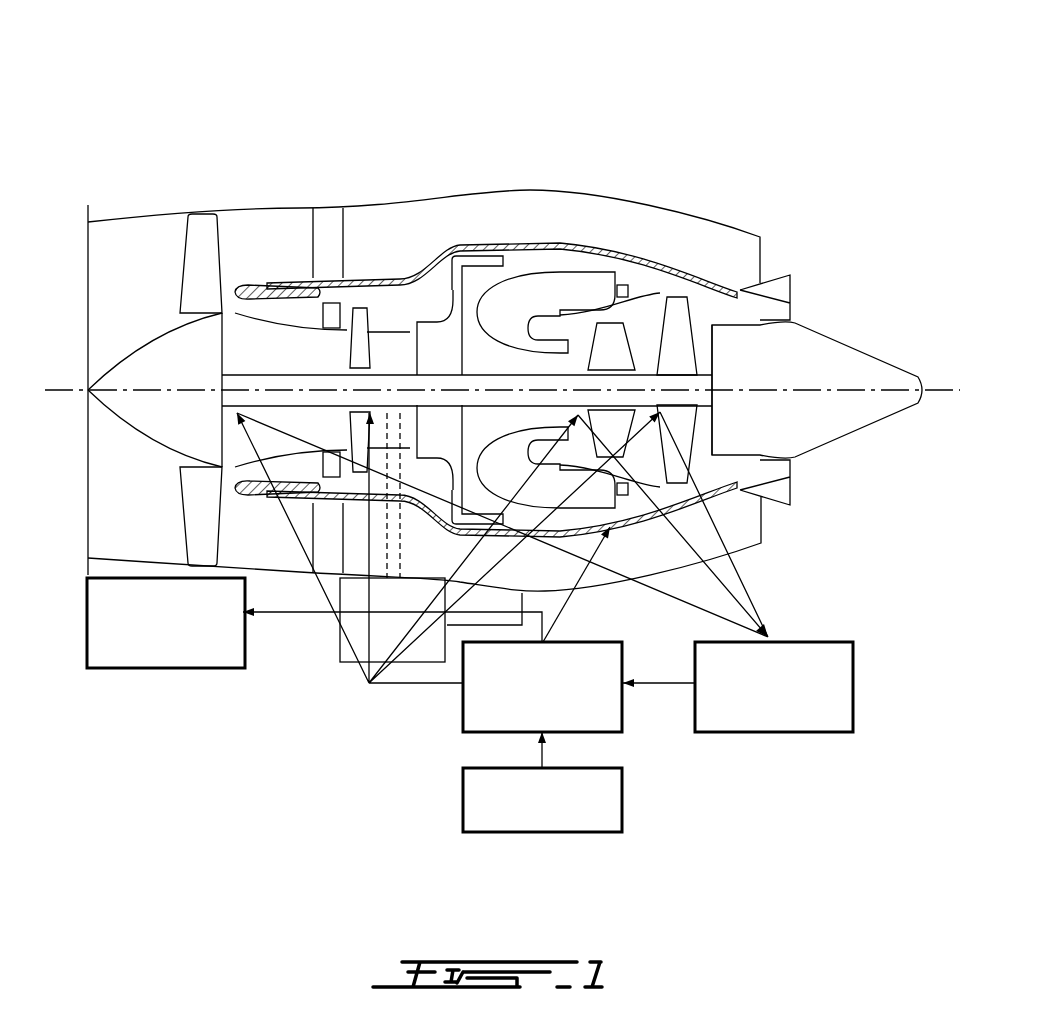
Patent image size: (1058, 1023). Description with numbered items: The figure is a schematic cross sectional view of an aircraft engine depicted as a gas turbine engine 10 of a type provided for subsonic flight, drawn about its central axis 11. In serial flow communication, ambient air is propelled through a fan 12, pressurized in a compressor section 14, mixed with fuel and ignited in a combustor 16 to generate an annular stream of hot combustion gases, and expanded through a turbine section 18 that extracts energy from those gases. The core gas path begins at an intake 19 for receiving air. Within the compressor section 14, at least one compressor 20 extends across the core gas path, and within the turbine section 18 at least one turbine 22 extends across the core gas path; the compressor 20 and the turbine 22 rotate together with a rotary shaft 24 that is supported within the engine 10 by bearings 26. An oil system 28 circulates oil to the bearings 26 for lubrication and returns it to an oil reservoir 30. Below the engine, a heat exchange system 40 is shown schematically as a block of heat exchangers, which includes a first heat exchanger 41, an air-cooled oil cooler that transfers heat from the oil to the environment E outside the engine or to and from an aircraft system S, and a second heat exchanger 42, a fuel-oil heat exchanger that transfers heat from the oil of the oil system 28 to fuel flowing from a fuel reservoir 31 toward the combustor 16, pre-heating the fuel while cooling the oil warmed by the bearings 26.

The gas turbine engine 10 is at (682, 131).
The principal rotational axis 11 is at (942, 390).
The fan 12 is at (180, 500).
The compressor section 14 is at (388, 305).
The combustor 16 is at (547, 287).
The turbine section 18 is at (650, 495).
The intake 19 is at (102, 252).
The compressor 20 is at (378, 367).
The turbine 22 is at (615, 343).
The rotary shaft 24 is at (412, 300).
The bearings 26 is at (402, 367).
The oil system 28 is at (860, 683).
The oil reservoir 30 is at (818, 642).
The fuel reservoir 31 is at (462, 805).
The heat exchange system 40 is at (682, 773).
The first heat exchanger 41 is at (482, 692).
The second heat exchanger 42 is at (462, 707).
The aircraft system S is at (165, 670).
The environment E is at (246, 812).